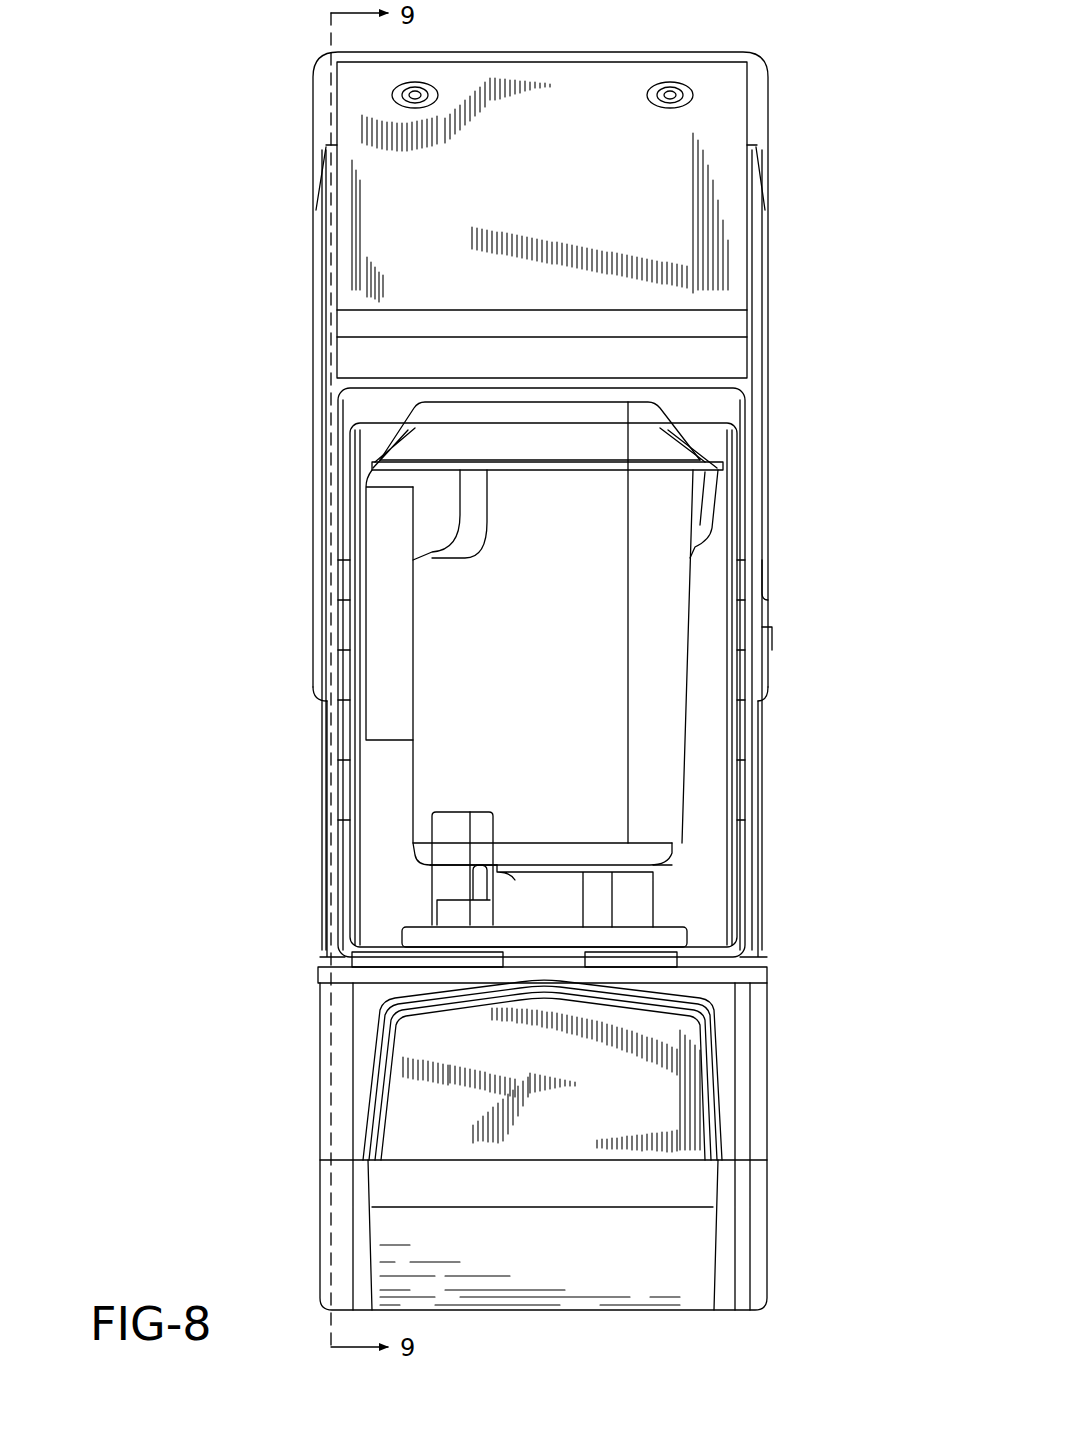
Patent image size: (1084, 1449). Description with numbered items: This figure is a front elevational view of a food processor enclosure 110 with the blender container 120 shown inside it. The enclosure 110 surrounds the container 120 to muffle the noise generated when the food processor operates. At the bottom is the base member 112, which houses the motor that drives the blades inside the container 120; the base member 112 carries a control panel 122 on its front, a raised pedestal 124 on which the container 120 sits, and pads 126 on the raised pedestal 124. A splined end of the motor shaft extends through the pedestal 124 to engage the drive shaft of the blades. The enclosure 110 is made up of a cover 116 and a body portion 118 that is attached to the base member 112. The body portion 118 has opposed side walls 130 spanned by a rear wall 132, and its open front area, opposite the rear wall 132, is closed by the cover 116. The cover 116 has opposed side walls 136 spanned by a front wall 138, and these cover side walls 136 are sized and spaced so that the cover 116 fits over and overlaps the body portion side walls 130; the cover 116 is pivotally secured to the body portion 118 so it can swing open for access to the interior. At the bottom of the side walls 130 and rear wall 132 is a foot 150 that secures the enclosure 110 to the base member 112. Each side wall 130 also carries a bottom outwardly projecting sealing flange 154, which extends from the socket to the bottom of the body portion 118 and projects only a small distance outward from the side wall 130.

The enclosure 110 is at (210, 148).
The base member 112 is at (775, 1100).
The cover 116 is at (773, 70).
The body portion 118 is at (766, 748).
The container 120 is at (650, 661).
The control panel 122 is at (412, 1096).
The raised pedestal 124 is at (417, 933).
The pads 126 is at (467, 913).
The side walls 130 is at (342, 832).
The rear wall 132 is at (718, 905).
The side walls 136 is at (320, 280).
The front wall 138 is at (576, 70).
The foot 150 is at (723, 955).
The bottom outwardly projecting sealing flange 154 is at (327, 755).